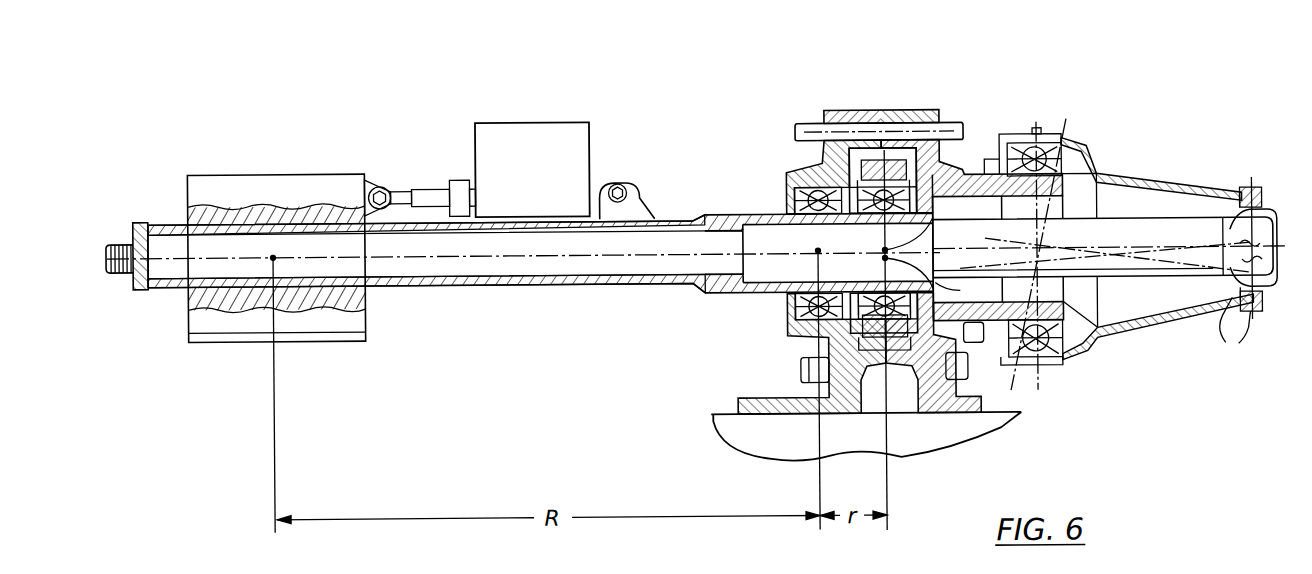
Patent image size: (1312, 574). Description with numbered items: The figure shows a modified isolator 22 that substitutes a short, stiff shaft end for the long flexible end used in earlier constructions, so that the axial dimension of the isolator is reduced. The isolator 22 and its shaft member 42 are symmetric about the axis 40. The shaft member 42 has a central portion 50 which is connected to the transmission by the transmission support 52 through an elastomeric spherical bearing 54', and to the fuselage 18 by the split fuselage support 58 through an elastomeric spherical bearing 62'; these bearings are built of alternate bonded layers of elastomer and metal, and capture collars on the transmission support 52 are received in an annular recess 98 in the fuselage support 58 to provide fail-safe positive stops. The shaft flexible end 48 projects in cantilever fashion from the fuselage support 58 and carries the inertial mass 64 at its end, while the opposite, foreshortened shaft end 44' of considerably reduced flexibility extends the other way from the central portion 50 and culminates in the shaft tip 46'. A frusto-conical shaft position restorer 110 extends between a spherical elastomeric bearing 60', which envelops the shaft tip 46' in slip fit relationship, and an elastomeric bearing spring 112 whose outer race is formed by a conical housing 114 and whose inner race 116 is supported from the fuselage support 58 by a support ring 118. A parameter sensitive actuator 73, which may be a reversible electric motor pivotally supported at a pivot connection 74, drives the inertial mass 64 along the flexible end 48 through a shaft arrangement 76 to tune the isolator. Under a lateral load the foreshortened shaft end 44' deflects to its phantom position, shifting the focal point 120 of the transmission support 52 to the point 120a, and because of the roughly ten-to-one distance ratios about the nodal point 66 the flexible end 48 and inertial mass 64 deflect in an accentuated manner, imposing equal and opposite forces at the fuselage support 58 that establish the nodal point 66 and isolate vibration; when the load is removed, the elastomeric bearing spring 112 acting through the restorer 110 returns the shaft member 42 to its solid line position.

The fuselage 18 is at (856, 445).
The isolator 22 is at (1104, 200).
The axis 40 is at (610, 253).
The shaft member 42 is at (578, 237).
The foreshortened shaft end 44' is at (1157, 227).
The shaft tip 46' is at (1265, 273).
The shaft flexible end 48 is at (503, 237).
The central portion 50 is at (819, 253).
The transmission support 52 is at (934, 213).
The elastomeric spherical bearing 54' is at (1091, 247).
The split fuselage support 58 is at (850, 110).
The spherical elastomeric bearing 60' is at (1274, 244).
The elastomeric spherical bearing 62' is at (816, 248).
The inertial mass 64 is at (276, 229).
The nodal point 66 is at (817, 250).
The actuator 73 is at (540, 120).
The pivot connection 74 is at (627, 186).
The shaft arrangement 76 is at (428, 186).
The annular recess 98 is at (893, 153).
The shaft position restorer 110 is at (1227, 211).
The elastomeric bearing spring 112 is at (1003, 144).
The conical housing 114 is at (1115, 174).
The inner race 116 is at (1090, 197).
The support ring 118 is at (984, 160).
The focal point 120 is at (885, 250).
The shifted focal point 120a is at (936, 284).